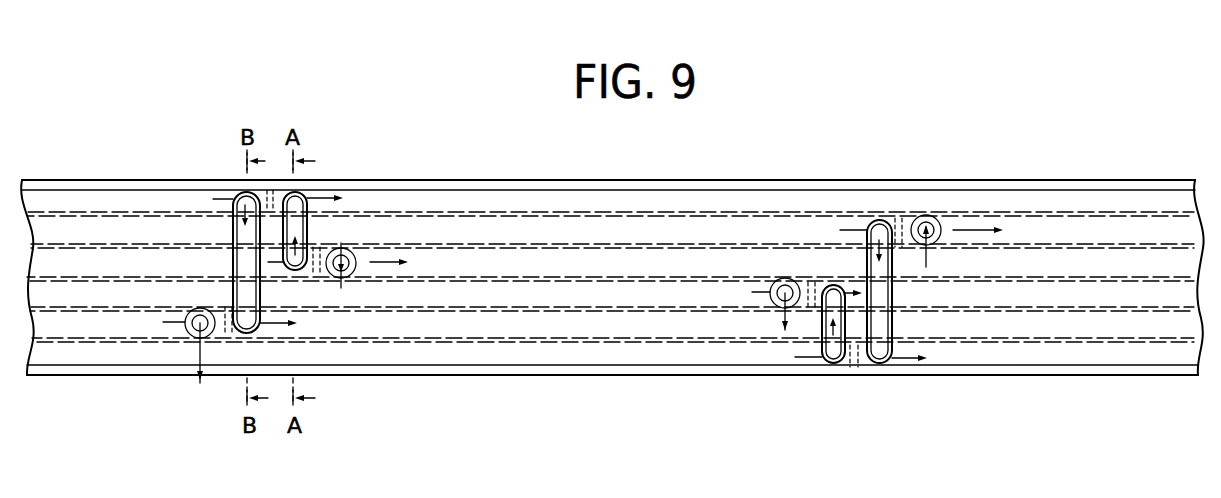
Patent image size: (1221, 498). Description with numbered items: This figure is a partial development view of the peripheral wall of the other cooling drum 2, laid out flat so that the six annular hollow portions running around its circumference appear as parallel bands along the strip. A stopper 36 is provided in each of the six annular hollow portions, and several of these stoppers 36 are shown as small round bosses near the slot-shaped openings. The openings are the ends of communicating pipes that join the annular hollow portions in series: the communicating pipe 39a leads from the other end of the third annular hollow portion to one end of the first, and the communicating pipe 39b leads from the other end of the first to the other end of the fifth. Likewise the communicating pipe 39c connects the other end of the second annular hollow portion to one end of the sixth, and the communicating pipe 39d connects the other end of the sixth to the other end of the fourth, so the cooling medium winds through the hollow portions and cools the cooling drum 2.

The other cooling drum 2 is at (460, 355).
The stopper 36 is at (277, 178).
The communicating pipe 39a is at (295, 228).
The communicating pipe 39b is at (247, 289).
The communicating pipe 39c is at (878, 325).
The communicating pipe 39d is at (835, 363).